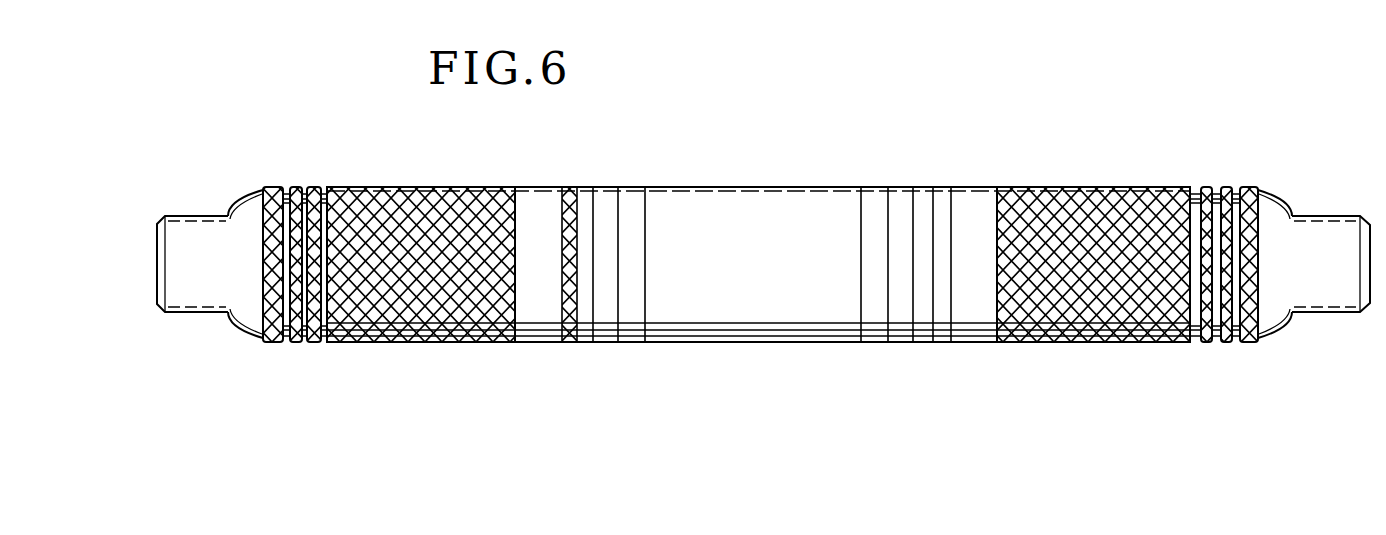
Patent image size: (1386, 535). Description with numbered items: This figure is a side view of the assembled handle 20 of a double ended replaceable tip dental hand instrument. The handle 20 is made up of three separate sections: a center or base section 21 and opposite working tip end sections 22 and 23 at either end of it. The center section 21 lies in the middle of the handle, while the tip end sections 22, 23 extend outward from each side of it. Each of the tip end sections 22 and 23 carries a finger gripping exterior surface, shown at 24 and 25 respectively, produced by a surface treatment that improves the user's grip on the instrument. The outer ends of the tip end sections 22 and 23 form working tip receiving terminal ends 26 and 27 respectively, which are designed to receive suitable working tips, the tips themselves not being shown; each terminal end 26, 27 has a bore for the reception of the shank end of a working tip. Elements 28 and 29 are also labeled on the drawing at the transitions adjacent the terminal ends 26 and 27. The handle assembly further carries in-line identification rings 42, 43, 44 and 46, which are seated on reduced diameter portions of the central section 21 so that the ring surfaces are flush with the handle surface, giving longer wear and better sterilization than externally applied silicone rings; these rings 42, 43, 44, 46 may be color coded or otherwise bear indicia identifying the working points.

The handle 20 is at (835, 107).
The center or base section 21 is at (860, 178).
The working tip end section 22 is at (405, 187).
The working tip end section 23 is at (1113, 187).
The finger gripping exterior surface 24 is at (417, 307).
The finger gripping exterior surface 25 is at (1106, 305).
The working tip receiving terminal end 26 is at (200, 298).
The working tip receiving terminal end 27 is at (1336, 302).
The first flared shoulder 28 is at (238, 206).
The second flared shoulder 29 is at (1288, 213).
The in-line identification ring 42 is at (601, 187).
The in-line identification ring 43 is at (633, 344).
The in-line identification ring 44 is at (877, 187).
The in-line identification ring 46 is at (905, 344).